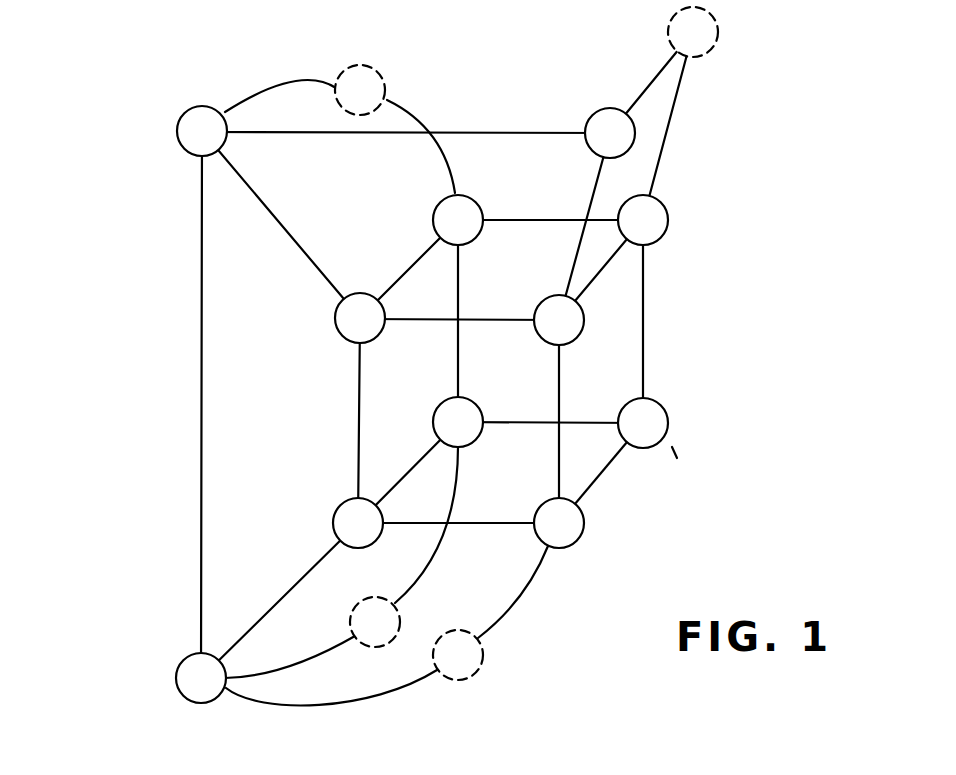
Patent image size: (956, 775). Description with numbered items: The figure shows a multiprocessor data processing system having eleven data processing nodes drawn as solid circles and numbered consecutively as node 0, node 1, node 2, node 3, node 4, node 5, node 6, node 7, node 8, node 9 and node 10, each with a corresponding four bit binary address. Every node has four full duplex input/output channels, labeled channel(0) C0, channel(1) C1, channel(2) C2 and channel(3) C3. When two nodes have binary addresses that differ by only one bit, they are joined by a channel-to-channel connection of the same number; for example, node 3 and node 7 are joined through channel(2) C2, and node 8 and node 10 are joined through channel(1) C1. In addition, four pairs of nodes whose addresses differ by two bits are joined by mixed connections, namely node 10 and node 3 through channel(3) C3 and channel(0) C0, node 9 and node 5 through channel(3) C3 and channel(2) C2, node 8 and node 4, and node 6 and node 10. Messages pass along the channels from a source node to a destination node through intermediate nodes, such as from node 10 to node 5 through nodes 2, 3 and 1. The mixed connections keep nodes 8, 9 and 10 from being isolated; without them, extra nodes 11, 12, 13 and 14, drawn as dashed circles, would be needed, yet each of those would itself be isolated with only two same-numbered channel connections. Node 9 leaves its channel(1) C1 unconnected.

The data processing node 0 is at (360, 318).
The data processing node 1 is at (559, 320).
The data processing node 2 is at (358, 523).
The data processing node 3 is at (559, 523).
The data processing node 4 is at (458, 220).
The data processing node 5 is at (643, 220).
The data processing node 6 is at (458, 422).
The data processing node 7 is at (643, 423).
The data processing node 8 is at (202, 131).
The data processing node 9 is at (610, 133).
The data processing node 10 is at (201, 678).
The additional node 11 is at (458, 655).
The additional node 12 is at (360, 90).
The additional node 13 is at (693, 32).
The additional node 14 is at (375, 622).
The channel(0) C0 is at (505, 132).
The channel(1) C1 is at (611, 176).
The channel(2) C2 is at (282, 82).
The channel(3) C3 is at (412, 110).